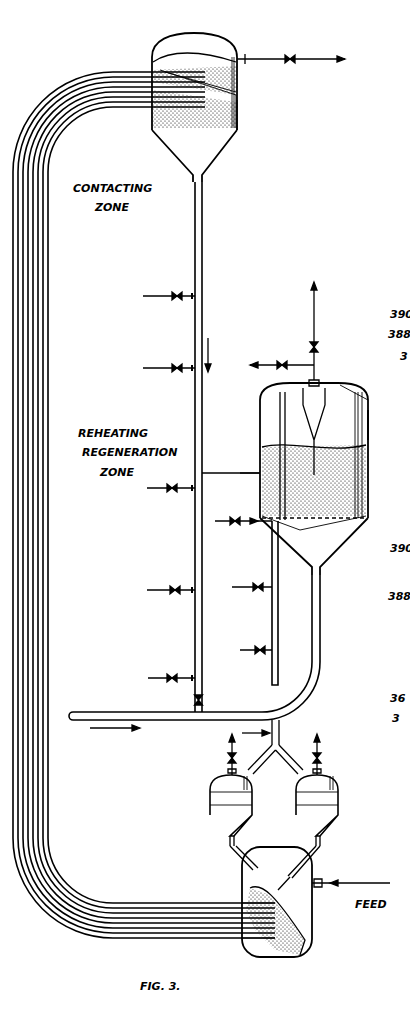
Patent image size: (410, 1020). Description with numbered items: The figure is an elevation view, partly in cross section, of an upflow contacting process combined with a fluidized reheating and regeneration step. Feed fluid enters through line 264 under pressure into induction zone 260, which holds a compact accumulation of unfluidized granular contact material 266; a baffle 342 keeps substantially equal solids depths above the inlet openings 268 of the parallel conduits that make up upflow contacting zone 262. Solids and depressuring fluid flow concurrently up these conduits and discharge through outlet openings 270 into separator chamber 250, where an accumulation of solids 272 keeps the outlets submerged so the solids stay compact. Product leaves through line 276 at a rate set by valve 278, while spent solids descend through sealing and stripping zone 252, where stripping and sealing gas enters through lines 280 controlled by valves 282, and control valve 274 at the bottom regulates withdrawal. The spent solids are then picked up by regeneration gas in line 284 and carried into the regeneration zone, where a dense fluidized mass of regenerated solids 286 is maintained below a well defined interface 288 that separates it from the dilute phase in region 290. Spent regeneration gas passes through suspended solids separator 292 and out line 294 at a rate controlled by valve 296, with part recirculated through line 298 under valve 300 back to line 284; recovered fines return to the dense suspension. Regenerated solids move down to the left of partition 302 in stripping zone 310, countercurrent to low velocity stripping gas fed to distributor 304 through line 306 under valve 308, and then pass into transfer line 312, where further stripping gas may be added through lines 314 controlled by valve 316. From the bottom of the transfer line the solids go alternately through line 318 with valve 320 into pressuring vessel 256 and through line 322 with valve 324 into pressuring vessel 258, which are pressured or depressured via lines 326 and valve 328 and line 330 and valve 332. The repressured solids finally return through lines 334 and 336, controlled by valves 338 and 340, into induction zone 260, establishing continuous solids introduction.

The contacting zone effluent-solids separator chamber 250 is at (232, 40).
The spent solids sealing and stripping zone 252 is at (203, 296).
The solids pressuring vessel 256 is at (338, 799).
The solids pressuring vessel 258 is at (214, 798).
The induction zone 260 is at (312, 922).
The upflow contacting zone 262 is at (45, 160).
The line 264 is at (196, 473).
The granular contact material 266 is at (248, 893).
The inlet openings 268 is at (266, 935).
The outlet openings 270 is at (245, 106).
The accumulation of solids 272 is at (240, 130).
The control valve 274 is at (193, 699).
The line 276 is at (300, 58).
The valve 278 is at (290, 64).
The lines 280 is at (158, 296).
The valves 282 is at (177, 300).
The line 284 is at (92, 712).
The fluidized mass of regenerated solids 286 is at (352, 469).
The interface 288 is at (368, 428).
The dilute phase region 290 is at (367, 398).
The suspended solids separator 292 is at (326, 386).
The line 294 is at (318, 365).
The valve 296 is at (318, 345).
The line 298 is at (292, 362).
The valve 300 is at (272, 368).
The partition 302 is at (260, 472).
The distributor 304 is at (262, 528).
The line 306 is at (235, 518).
The valve 308 is at (238, 517).
The stripping zone 310 is at (262, 447).
The transfer line 312 is at (272, 602).
The lines 314 is at (236, 587).
The valve 316 is at (258, 584).
The line 318 is at (280, 735).
The valve 320 is at (290, 766).
The line 322 is at (262, 764).
The valve 324 is at (276, 776).
The lines 326 is at (322, 771).
The valve 328 is at (322, 756).
The line 330 is at (226, 757).
The valve 332 is at (226, 770).
The line 334 is at (322, 842).
The line 336 is at (228, 840).
The valve 338 is at (302, 846).
The valve 340 is at (240, 858).
The baffle 342 is at (306, 868).